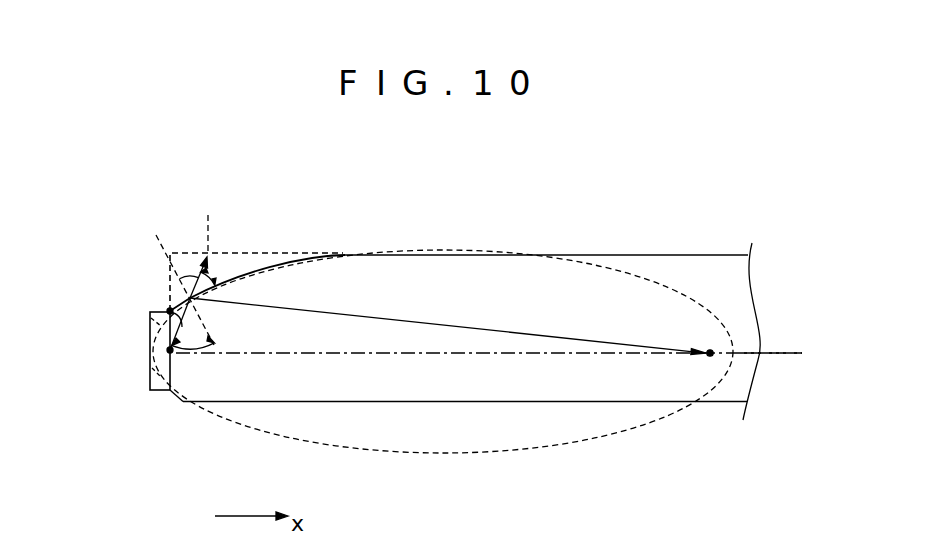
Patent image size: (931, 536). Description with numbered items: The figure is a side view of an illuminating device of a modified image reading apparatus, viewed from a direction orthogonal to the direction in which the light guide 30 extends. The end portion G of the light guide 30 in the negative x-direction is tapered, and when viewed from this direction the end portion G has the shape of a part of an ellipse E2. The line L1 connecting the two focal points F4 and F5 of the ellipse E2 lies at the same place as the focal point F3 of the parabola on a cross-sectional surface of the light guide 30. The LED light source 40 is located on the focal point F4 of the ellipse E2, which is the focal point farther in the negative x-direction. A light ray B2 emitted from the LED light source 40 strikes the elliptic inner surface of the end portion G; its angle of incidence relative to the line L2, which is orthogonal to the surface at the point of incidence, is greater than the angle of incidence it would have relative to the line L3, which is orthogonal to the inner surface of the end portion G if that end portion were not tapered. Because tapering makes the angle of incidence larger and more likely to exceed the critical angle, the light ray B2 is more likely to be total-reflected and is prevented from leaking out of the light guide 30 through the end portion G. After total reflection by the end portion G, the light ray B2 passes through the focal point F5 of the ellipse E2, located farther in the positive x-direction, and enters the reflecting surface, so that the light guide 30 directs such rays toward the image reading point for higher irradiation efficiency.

The light guide 30 is at (634, 268).
The LED light source 40 is at (150, 392).
The line L1 is at (520, 327).
The focal point F3 is at (787, 353).
The ellipse E2 is at (468, 454).
The end portion G is at (288, 264).
The line orthogonal to the surface L2 is at (152, 231).
The line orthogonal to the inner surface L3 is at (210, 217).
The light ray B2 is at (169, 309).
The focal point F4 is at (170, 350).
The focal point F5 is at (710, 356).